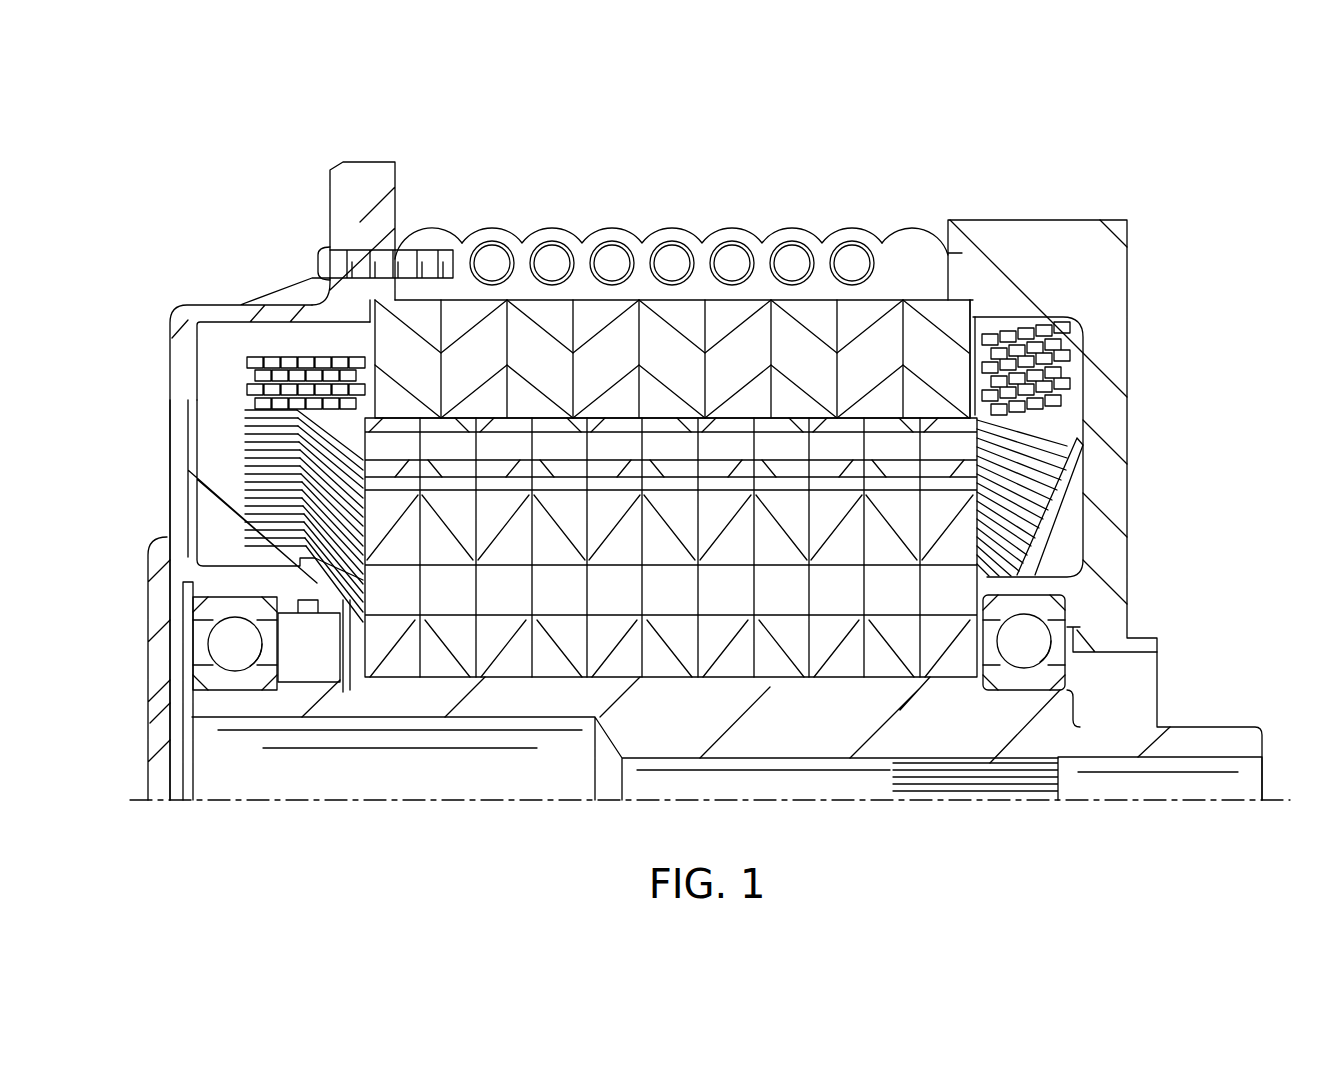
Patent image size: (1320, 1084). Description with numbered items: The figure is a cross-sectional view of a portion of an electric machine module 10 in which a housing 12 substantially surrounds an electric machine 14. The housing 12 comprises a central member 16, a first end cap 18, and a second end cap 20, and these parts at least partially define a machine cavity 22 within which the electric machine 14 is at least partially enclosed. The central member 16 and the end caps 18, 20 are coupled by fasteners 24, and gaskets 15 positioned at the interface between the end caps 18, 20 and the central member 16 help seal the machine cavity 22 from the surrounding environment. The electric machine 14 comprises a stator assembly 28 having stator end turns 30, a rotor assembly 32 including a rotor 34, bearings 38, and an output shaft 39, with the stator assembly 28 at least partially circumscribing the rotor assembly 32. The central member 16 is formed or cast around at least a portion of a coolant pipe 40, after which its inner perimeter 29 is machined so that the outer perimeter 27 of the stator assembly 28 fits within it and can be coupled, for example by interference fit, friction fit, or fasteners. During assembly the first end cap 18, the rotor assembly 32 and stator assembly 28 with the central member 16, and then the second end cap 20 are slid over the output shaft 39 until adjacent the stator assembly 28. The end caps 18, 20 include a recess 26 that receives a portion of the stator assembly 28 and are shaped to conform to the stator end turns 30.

The electric machine module 10 is at (1118, 150).
The housing 12 is at (677, 188).
The electric machine 14 is at (728, 325).
The gaskets 15 is at (400, 247).
The central member 16 is at (914, 232).
The first end cap 18 is at (330, 190).
The second end cap 20 is at (1130, 265).
The machine cavity 22 is at (1044, 529).
The fasteners 24 is at (340, 263).
The recess 26 is at (372, 300).
The outer perimeter 27 is at (928, 306).
The stator assembly 28 is at (288, 343).
The inner perimeter 29 is at (818, 308).
The stator end turns 30 is at (255, 428).
The rotor assembly 32 is at (348, 462).
The rotor 34 is at (958, 527).
The bearings 38 is at (1033, 637).
The output shaft 39 is at (1240, 785).
The coolant pipe 40 is at (610, 253).